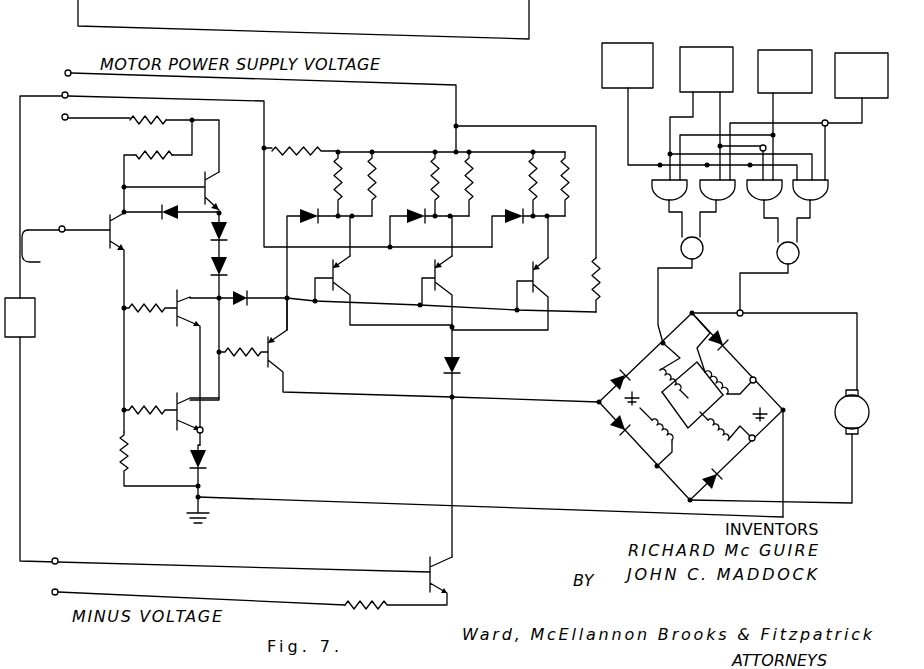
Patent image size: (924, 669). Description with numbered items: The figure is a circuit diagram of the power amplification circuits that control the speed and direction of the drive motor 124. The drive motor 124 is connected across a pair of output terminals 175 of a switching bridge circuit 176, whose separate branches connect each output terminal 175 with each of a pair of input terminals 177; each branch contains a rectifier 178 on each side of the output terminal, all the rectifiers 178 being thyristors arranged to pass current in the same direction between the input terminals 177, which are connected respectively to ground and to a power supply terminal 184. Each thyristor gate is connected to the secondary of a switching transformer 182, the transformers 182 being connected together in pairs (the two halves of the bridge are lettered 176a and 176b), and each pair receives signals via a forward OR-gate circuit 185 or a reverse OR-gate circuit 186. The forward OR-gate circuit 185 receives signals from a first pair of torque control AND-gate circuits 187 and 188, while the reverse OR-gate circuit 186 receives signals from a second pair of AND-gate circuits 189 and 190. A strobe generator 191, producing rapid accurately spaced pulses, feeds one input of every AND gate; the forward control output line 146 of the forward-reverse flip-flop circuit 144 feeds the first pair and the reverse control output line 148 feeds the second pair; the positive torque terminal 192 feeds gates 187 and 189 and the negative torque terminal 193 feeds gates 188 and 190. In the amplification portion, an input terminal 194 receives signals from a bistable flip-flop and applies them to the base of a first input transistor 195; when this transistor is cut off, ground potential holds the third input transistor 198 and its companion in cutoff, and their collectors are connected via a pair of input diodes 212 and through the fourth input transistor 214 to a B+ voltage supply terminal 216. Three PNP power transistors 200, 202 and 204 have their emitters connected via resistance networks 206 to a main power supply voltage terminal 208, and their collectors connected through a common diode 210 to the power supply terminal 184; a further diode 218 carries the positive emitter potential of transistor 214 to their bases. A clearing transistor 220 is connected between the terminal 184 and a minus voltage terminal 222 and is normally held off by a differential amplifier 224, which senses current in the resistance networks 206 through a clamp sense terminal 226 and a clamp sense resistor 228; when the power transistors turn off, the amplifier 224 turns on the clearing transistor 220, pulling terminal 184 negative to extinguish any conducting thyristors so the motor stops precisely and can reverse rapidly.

The main power supply voltage terminal 208 is at (68, 70).
The clamp sense terminal 226 is at (49, 74).
The B+ voltage supply terminal 216 is at (63, 121).
The fourth input transistor 214 is at (213, 196).
The clamp sense resistor 228 is at (302, 140).
The resistance networks 206 is at (336, 186).
The strobe generator 191 is at (608, 42).
The forward-reverse flip-flop circuit 144 is at (686, 46).
The positive torque control terminal 192 is at (765, 49).
The negative torque control terminal 193 is at (840, 52).
The forward control output line 146 is at (692, 106).
The reverse control output line 148 is at (722, 108).
The torque control AND-gate circuit 187 is at (652, 188).
The torque control AND-gate circuit 188 is at (730, 200).
The torque control AND-gate circuit 189 is at (756, 211).
The torque control AND-gate circuit 190 is at (820, 200).
The forward OR-gate circuit 185 is at (680, 246).
The reverse OR-gate circuit 186 is at (808, 254).
The first input transistor 195 is at (99, 322).
The input terminal 194 is at (66, 237).
The differential amplifier 224 is at (35, 322).
The input diodes 212 is at (241, 255).
The power transistor 200 is at (325, 268).
The power transistor 202 is at (420, 272).
The power transistor 204 is at (517, 275).
The third input transistor 198 is at (172, 395).
The diode 218 is at (237, 306).
The common diode 210 is at (440, 358).
The power supply terminal 184 is at (455, 395).
The switching bridge circuit 176 is at (630, 474).
The motor winding 176a is at (690, 330).
The motor winding 176b is at (702, 466).
The output terminals 175 is at (694, 311).
The input terminals 177 is at (599, 400).
The rectifiers 178 is at (618, 374).
The switching transformers 182 is at (658, 368).
The drive motor 124 is at (848, 398).
The clearing transistor 220 is at (445, 572).
The minus voltage terminal 222 is at (53, 594).